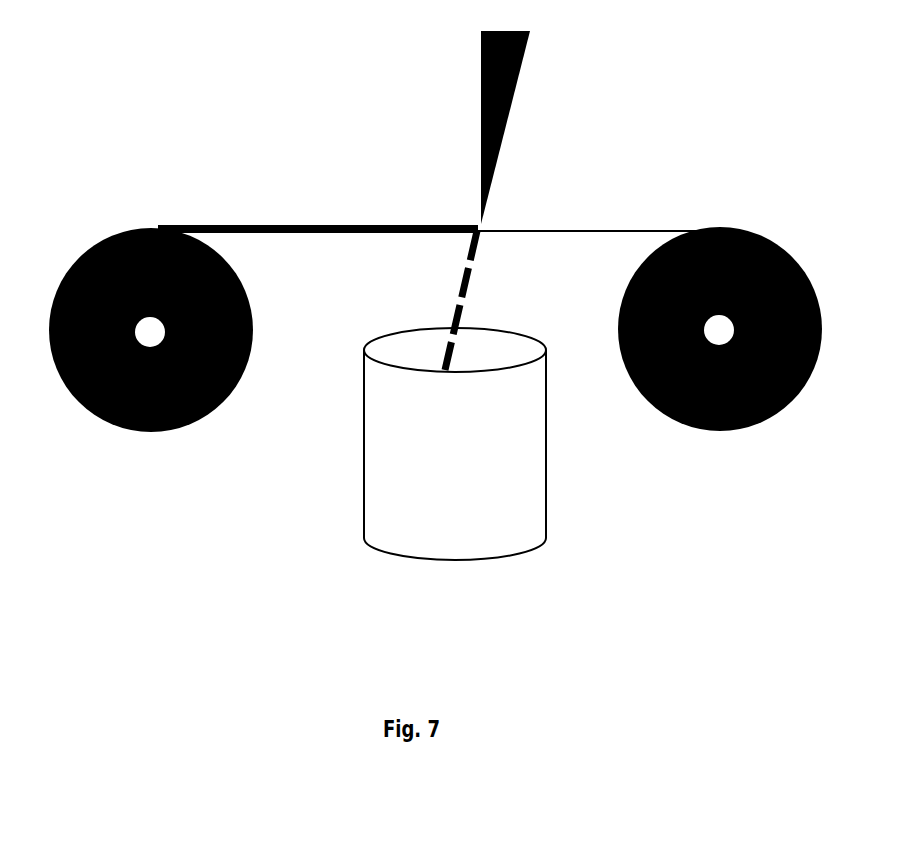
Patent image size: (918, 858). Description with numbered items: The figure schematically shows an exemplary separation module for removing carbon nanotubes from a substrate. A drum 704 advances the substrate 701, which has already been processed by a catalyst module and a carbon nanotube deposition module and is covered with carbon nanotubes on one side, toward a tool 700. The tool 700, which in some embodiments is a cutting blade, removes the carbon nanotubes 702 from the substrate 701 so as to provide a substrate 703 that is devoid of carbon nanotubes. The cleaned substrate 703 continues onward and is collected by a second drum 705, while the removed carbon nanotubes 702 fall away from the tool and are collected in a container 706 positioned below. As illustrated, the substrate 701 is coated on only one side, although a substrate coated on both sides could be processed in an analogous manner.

The tool 700 is at (465, 127).
The substrate 701 is at (318, 204).
The carbon nanotubes 702 is at (486, 300).
The substrate devoid of carbon nanotubes 703 is at (591, 210).
The drum 704 is at (151, 352).
The drum 705 is at (720, 351).
The container 706 is at (455, 444).